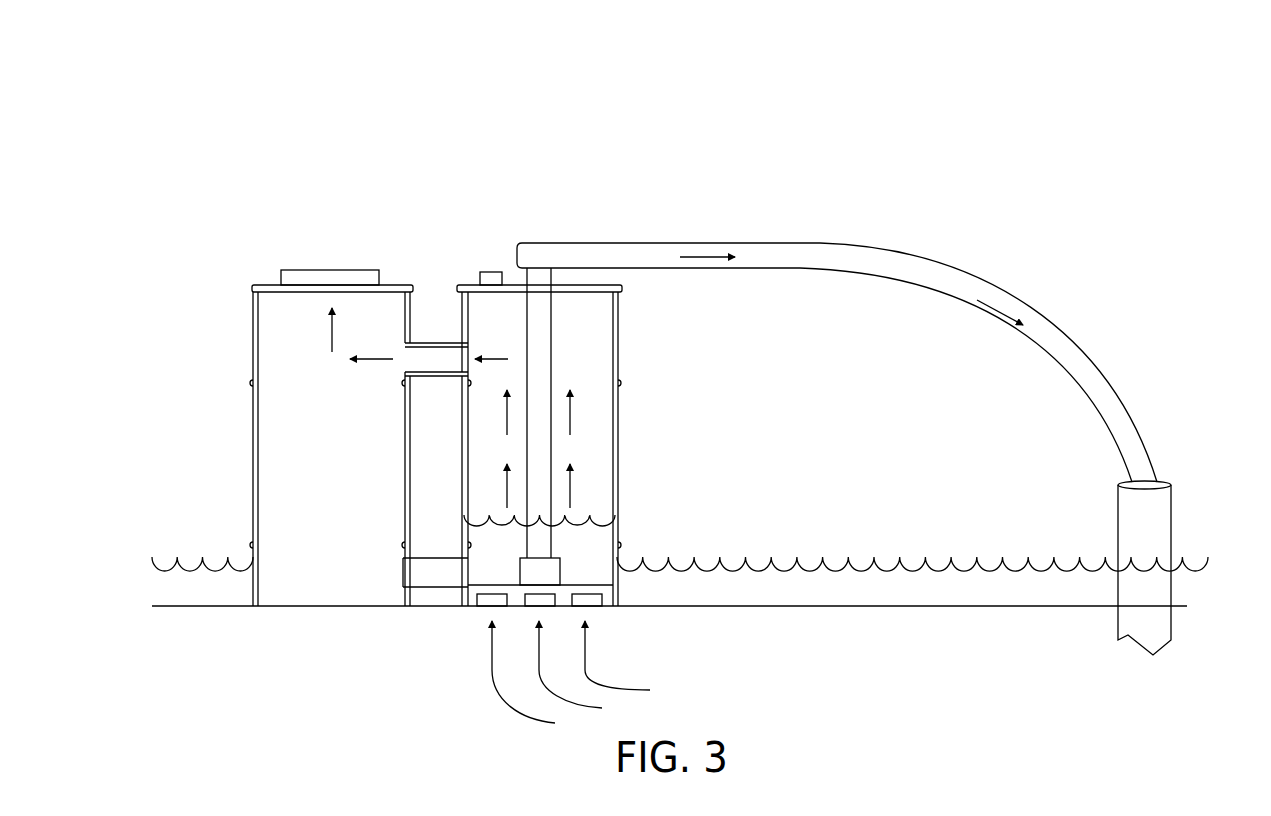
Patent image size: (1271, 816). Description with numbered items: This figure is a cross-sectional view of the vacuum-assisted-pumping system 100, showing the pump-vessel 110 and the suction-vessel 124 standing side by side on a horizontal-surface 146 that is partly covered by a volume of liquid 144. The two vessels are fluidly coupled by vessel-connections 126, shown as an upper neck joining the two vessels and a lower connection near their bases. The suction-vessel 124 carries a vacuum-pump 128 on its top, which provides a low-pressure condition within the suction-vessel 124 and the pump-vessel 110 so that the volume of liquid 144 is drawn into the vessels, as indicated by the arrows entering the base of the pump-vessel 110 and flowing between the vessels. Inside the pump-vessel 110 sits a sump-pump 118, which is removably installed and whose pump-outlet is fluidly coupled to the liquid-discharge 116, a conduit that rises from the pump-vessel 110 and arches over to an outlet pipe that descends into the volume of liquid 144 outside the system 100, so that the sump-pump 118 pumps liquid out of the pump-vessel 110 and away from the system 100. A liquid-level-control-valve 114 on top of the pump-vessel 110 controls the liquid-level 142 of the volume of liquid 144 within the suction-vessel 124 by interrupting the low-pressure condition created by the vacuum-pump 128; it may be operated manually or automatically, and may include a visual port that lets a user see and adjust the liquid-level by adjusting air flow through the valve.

The vacuum-assisted-pumping system 100 is at (1013, 233).
The pump-vessel 110 is at (537, 180).
The liquid-level-control-valve 114 is at (486, 270).
The liquid-discharge 116 is at (881, 262).
The sump-pump 118 is at (552, 577).
The suction-vessel 124 is at (253, 332).
The vessel-connection 126 is at (431, 360).
The vacuum-pump 128 is at (366, 270).
The liquid-level 142 is at (583, 511).
The volume of liquid 144 is at (730, 575).
The horizontal-surface 146 is at (872, 606).